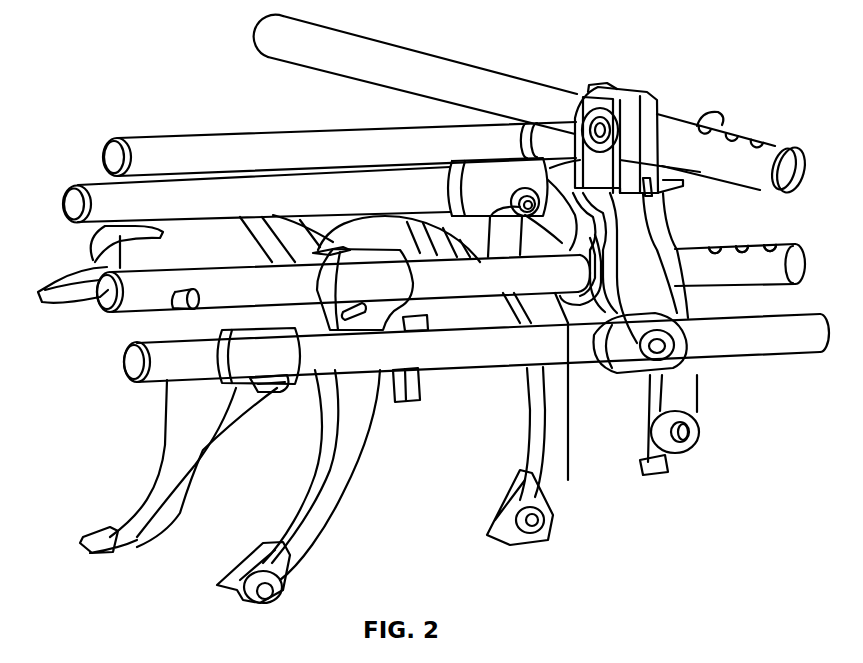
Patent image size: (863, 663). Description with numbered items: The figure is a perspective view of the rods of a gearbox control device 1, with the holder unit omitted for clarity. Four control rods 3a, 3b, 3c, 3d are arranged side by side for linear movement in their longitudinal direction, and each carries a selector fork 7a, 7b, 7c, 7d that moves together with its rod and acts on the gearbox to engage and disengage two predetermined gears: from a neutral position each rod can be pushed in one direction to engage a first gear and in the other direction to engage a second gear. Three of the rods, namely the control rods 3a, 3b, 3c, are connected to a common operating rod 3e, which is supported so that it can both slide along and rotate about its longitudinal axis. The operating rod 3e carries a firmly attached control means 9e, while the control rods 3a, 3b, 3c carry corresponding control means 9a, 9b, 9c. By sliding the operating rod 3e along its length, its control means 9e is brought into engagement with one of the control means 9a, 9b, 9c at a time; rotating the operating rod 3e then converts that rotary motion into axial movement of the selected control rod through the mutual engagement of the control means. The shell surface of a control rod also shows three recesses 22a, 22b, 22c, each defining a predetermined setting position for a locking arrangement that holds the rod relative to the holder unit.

The control device 1 is at (576, 53).
The control rod 3a is at (455, 360).
The control rod 3b is at (133, 307).
The control rod 3c is at (104, 193).
The control rod 3d is at (190, 146).
The operating rod 3e is at (298, 55).
The selector fork 7a is at (177, 416).
The selector fork 7b is at (343, 490).
The selector fork 7c is at (547, 477).
The selector fork 7d is at (687, 395).
The control means 9a is at (627, 297).
The control means 9b is at (580, 218).
The control means 9c is at (567, 193).
The control means 9e is at (574, 143).
The recess 22a is at (746, 318).
The recess 22b is at (775, 318).
The recess 22c is at (806, 320).